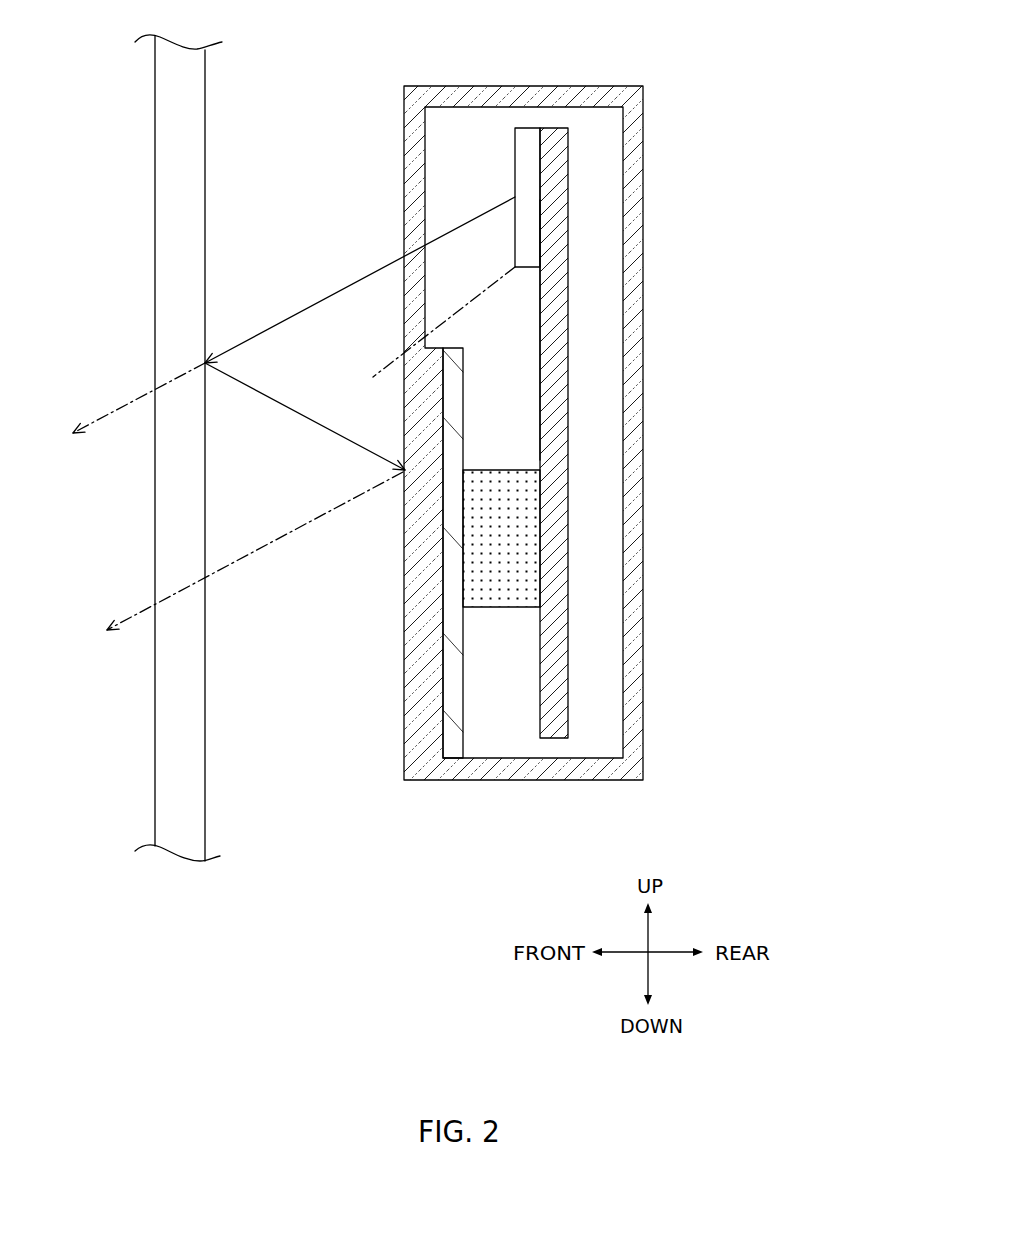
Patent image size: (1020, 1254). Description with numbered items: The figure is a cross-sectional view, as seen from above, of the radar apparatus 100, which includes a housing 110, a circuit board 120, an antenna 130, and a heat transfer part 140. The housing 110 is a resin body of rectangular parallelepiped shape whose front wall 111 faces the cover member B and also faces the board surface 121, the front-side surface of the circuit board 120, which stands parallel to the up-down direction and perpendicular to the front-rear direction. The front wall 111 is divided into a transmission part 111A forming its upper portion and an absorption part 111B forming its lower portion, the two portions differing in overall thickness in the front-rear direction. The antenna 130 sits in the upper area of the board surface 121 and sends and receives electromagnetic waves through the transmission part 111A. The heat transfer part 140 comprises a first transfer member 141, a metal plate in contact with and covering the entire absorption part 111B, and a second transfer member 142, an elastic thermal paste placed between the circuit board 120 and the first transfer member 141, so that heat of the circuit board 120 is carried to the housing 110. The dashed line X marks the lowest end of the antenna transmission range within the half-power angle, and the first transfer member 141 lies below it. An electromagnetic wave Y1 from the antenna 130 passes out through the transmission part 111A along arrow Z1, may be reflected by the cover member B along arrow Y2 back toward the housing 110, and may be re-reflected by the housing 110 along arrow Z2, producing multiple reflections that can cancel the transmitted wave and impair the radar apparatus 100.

The radar apparatus 100 is at (561, 435).
The housing 110 is at (521, 405).
The front wall 111 is at (480, 433).
The transmission part 111A is at (412, 172).
The absorption part 111B is at (415, 717).
The circuit board 120 is at (557, 148).
The board surface 121 is at (540, 327).
The antenna 130 is at (527, 138).
The heat transfer part 140 is at (505, 594).
The first transfer member 141 is at (455, 680).
The second transfer member 142 is at (510, 490).
The cover member B is at (170, 216).
The dashed line X is at (395, 357).
The electromagnetic wave Y1 is at (305, 310).
The arrow Y2 is at (308, 423).
The arrow Z1 is at (142, 393).
The arrow Z2 is at (272, 542).